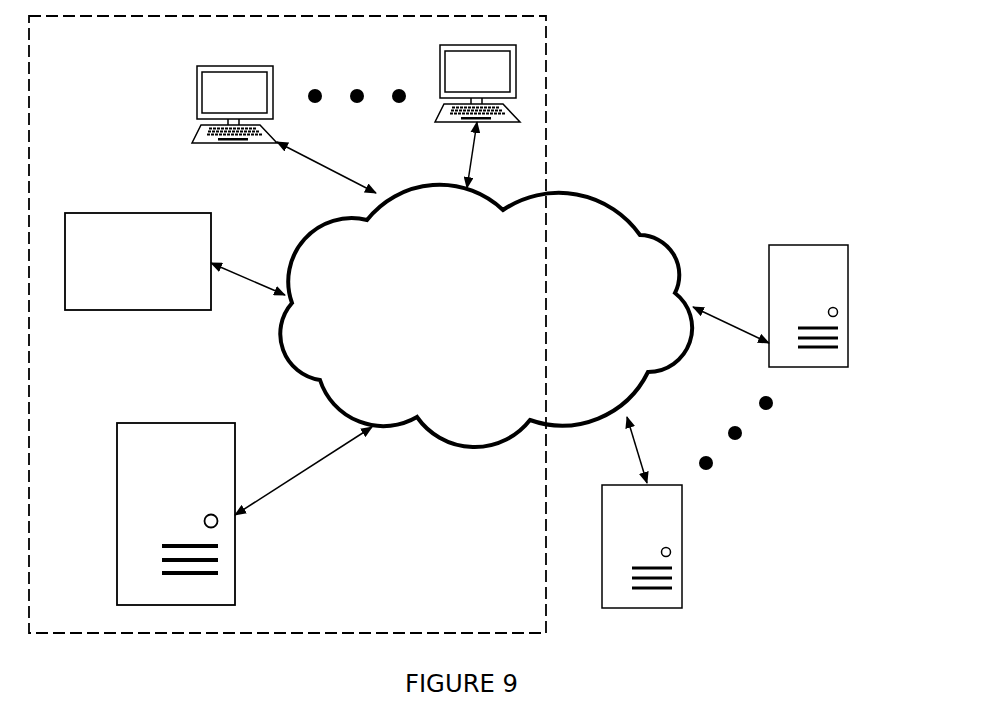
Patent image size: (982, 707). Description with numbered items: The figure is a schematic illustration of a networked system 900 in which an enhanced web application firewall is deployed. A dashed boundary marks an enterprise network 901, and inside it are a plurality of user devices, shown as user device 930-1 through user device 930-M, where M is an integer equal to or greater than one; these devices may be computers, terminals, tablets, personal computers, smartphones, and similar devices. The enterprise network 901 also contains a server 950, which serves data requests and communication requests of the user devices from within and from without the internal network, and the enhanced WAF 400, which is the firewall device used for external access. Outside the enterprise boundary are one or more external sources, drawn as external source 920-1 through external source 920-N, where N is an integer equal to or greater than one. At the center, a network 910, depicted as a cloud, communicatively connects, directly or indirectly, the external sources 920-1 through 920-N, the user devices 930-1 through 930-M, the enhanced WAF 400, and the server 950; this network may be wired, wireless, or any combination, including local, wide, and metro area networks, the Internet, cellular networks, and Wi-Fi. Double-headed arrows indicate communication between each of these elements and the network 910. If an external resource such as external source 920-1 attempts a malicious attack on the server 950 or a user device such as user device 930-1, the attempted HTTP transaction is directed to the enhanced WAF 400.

The networked system 900 is at (793, 65).
The enterprise network 901 is at (547, 76).
The network 910 is at (617, 203).
The user device 930-1 is at (197, 108).
The user device 930-M is at (438, 78).
The enhanced WAF 400 is at (137, 312).
The server 950 is at (235, 555).
The external source 920-1 is at (642, 610).
The external source 920-N is at (802, 367).